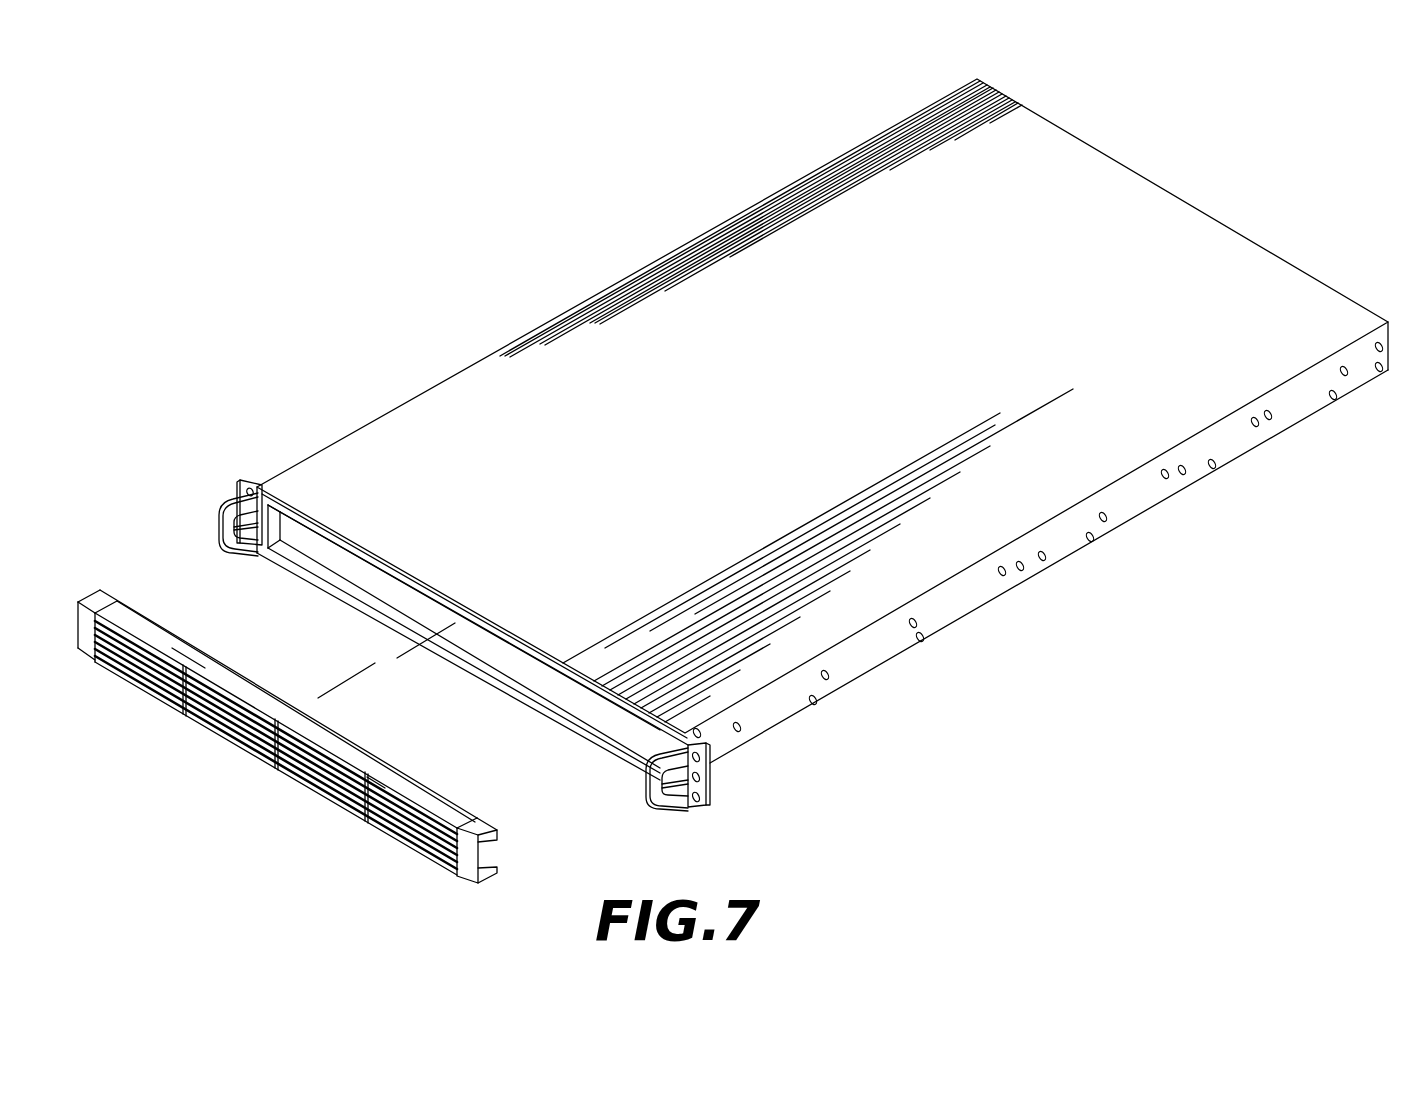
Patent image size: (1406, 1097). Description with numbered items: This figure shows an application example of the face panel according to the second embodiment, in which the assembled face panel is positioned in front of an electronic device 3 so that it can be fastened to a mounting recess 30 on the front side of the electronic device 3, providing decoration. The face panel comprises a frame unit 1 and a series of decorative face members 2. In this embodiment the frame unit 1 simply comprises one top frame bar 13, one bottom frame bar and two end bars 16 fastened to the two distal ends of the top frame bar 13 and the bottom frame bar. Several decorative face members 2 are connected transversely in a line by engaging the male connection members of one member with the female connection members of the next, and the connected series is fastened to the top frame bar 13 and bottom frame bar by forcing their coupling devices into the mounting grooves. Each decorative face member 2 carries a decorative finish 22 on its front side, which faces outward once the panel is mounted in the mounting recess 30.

The frame unit 1 is at (385, 742).
The decorative face member 2 is at (156, 707).
The electronic device 3 is at (365, 430).
The top frame bar 13 is at (415, 795).
The end bar 16 is at (489, 828).
The decorative finish 22 is at (247, 740).
The mounting recess 30 is at (350, 563).